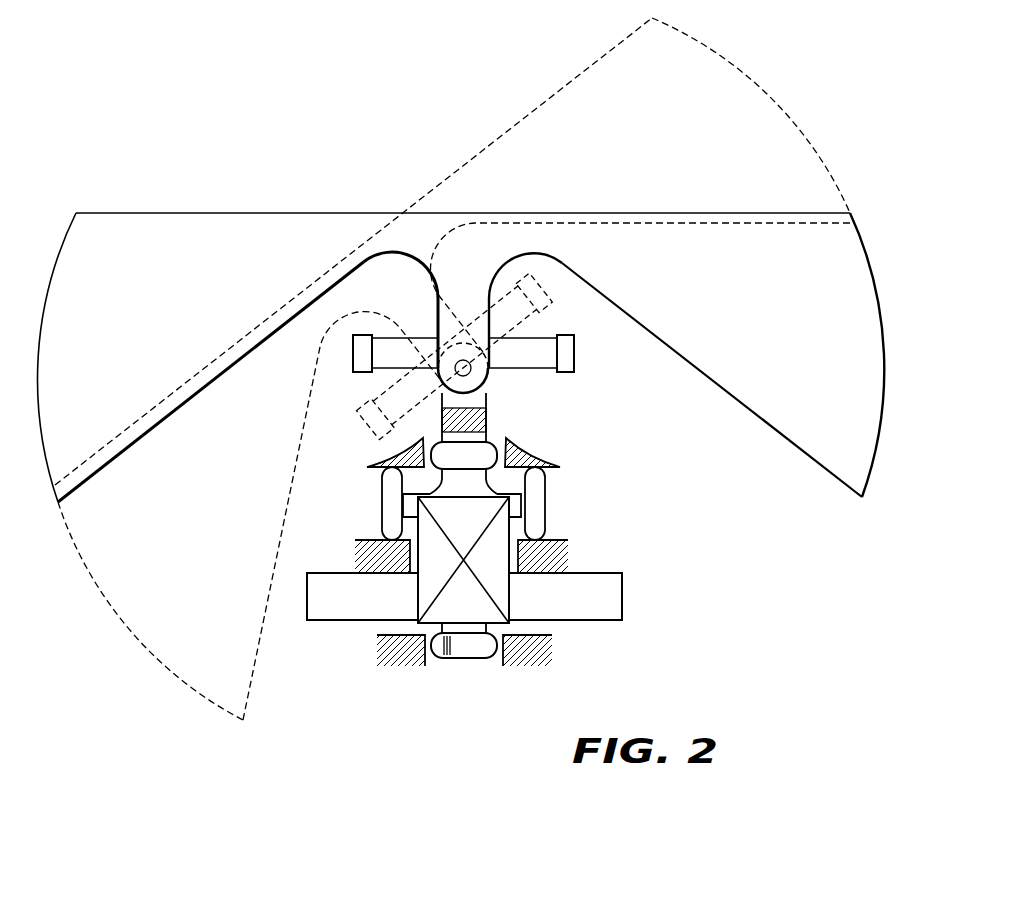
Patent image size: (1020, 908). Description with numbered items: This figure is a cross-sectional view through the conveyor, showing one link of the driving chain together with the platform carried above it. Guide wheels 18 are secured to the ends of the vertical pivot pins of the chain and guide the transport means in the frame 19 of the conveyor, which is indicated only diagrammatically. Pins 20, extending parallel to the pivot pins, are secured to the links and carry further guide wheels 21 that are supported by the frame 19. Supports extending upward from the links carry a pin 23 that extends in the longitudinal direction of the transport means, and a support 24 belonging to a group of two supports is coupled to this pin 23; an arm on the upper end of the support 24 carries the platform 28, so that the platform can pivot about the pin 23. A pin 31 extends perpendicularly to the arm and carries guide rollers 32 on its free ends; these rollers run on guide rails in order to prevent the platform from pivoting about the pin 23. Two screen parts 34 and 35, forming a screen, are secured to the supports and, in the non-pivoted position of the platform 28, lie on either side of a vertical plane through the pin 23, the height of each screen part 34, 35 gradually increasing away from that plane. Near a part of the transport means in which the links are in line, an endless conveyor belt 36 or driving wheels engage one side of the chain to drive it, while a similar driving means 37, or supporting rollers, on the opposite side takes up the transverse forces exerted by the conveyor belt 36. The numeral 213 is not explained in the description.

The platform 28 is at (264, 213).
The screen part 34 is at (71, 391).
The screen part 35 is at (789, 336).
The support 24 is at (438, 301).
The pin 23 is at (458, 364).
The pin 31 is at (543, 361).
The guide roller 32 is at (355, 352).
The guide wheel 18 is at (486, 442).
The frame 19 is at (548, 457).
The guide wheel 21 is at (547, 484).
The pin 20 is at (521, 509).
The drive body 213 is at (447, 612).
The endless conveyor belt 36 is at (331, 610).
The driving means 37 is at (616, 600).